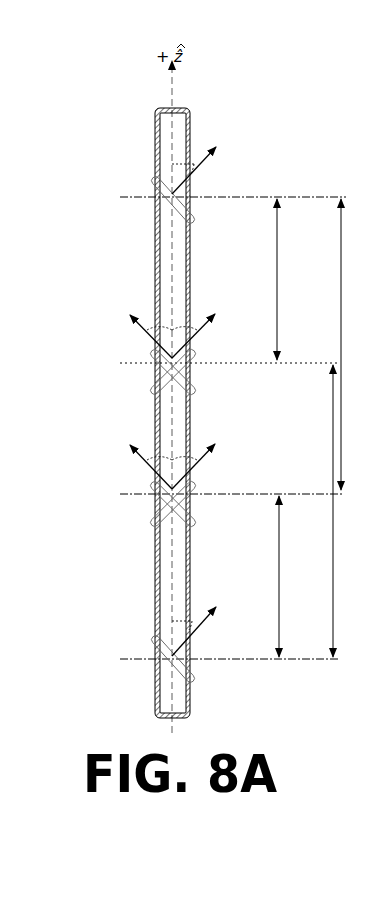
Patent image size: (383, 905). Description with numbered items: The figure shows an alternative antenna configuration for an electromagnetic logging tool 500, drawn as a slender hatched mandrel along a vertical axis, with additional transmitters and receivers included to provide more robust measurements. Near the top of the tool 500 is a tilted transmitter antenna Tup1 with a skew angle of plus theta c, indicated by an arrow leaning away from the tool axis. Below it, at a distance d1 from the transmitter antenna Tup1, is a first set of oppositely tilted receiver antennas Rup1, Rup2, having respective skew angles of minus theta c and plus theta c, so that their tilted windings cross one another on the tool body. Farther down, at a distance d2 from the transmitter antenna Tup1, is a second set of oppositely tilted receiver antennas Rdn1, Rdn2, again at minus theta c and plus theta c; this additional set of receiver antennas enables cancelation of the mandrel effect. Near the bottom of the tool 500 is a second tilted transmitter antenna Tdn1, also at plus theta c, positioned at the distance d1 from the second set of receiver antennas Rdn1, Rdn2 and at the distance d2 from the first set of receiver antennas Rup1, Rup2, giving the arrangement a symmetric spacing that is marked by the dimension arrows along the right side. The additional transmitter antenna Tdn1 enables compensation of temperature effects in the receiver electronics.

The electromagnetic logging tool 500 is at (170, 100).
The tilted transmitter antenna Tup1 is at (152, 178).
The second tilted transmitter antenna Tdn1 is at (152, 636).
The receiver antenna Rup1 is at (203, 340).
The receiver antenna Rup2 is at (135, 340).
The receiver antenna Rdn1 is at (203, 471).
The receiver antenna Rdn2 is at (135, 471).
The distance d1 is at (296, 428).
The distance d2 is at (353, 428).